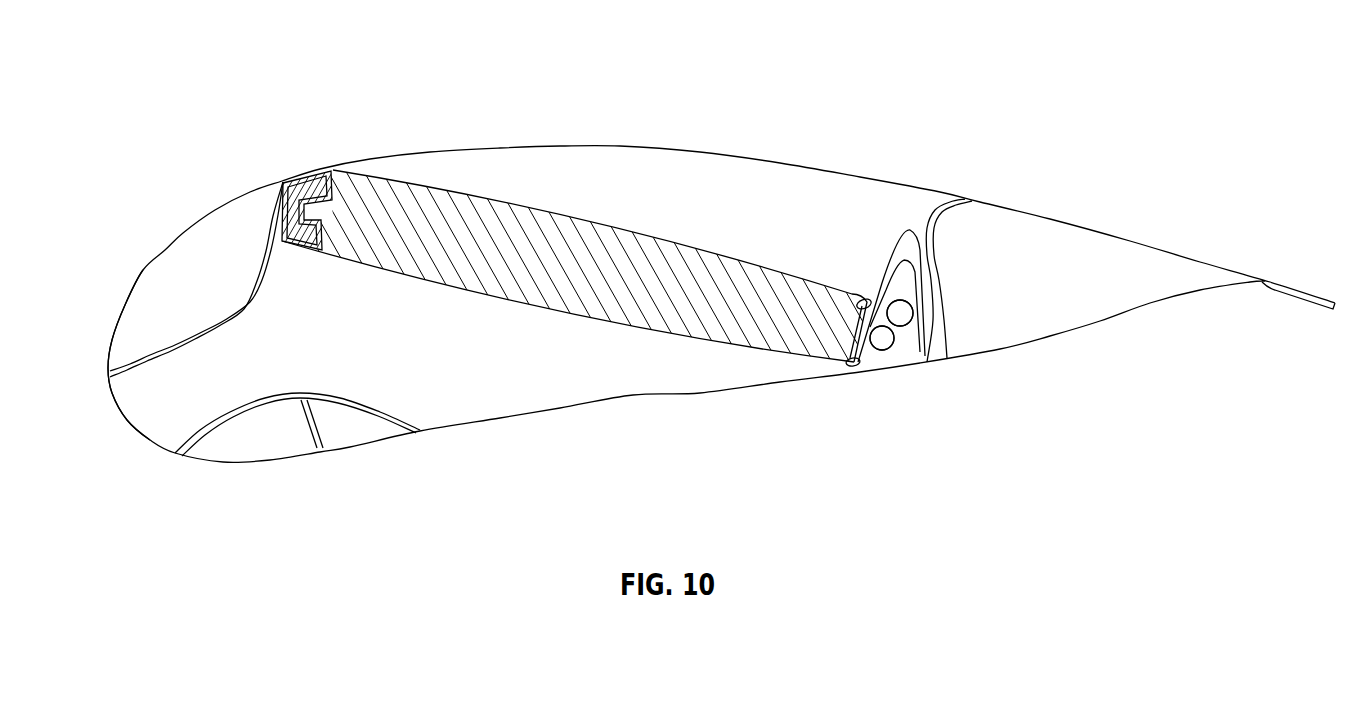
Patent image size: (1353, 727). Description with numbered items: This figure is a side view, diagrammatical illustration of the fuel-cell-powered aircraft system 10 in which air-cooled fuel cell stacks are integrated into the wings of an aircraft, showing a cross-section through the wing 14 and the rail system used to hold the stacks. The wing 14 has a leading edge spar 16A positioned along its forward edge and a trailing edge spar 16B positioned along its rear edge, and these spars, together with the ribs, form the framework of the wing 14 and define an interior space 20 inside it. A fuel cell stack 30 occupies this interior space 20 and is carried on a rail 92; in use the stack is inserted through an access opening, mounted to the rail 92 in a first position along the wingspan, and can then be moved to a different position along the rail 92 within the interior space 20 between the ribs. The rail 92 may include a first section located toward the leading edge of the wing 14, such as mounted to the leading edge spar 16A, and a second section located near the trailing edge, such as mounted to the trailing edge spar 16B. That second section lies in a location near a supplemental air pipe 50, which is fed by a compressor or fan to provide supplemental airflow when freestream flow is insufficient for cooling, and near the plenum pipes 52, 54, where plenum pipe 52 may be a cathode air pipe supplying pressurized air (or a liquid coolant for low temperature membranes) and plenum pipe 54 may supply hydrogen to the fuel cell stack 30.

The fuel-cell-powered aircraft system 10 is at (236, 48).
The wing 14 is at (121, 419).
The leading edge spar 16A is at (199, 273).
The trailing edge spar 16B is at (903, 234).
The interior space 20 is at (379, 347).
The fuel cell stack 30 is at (496, 190).
The supplemental air pipe 50 is at (920, 375).
The plenum pipe 52 is at (900, 313).
The plenum pipe 54 is at (882, 338).
The rail 92 is at (301, 193).